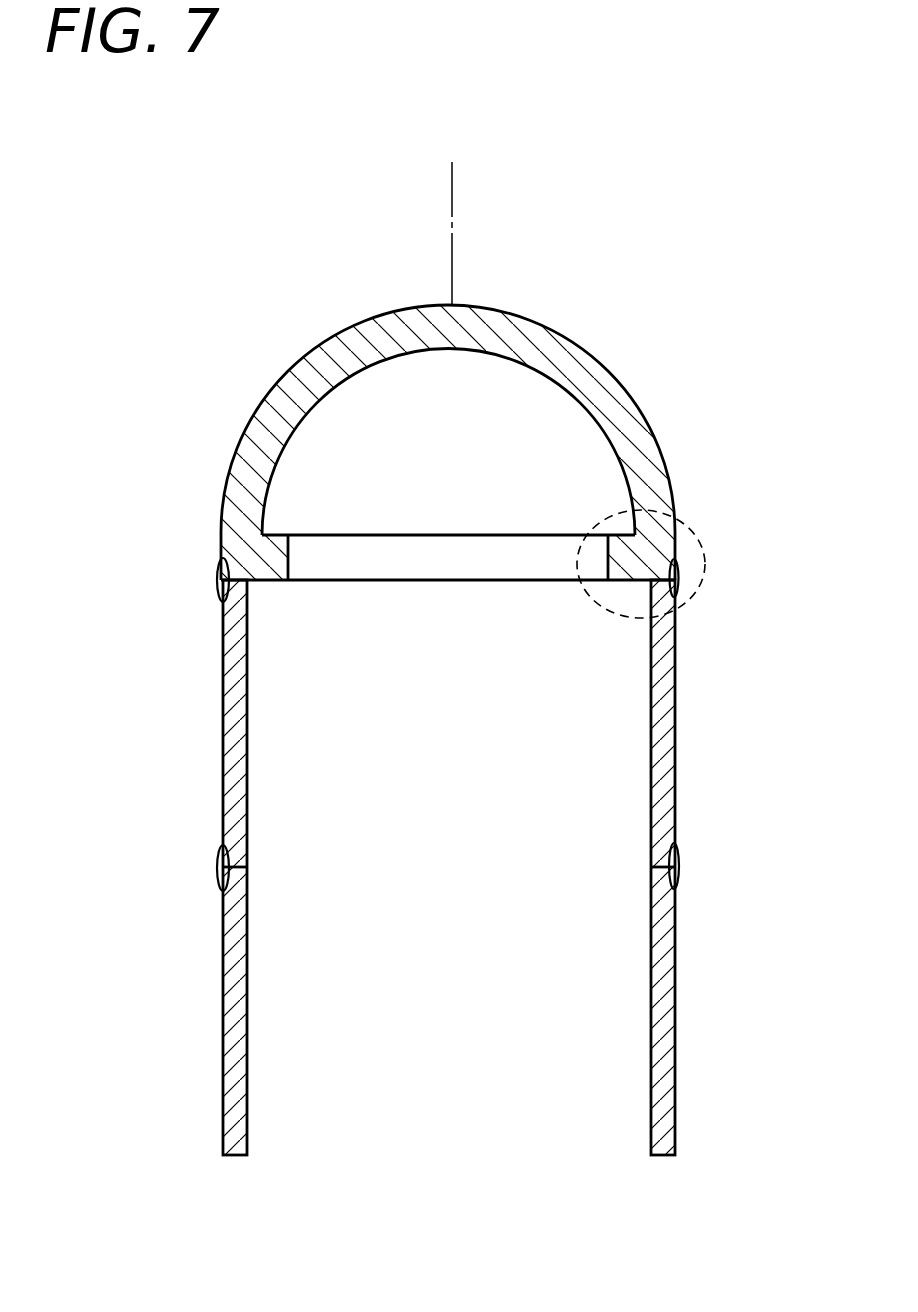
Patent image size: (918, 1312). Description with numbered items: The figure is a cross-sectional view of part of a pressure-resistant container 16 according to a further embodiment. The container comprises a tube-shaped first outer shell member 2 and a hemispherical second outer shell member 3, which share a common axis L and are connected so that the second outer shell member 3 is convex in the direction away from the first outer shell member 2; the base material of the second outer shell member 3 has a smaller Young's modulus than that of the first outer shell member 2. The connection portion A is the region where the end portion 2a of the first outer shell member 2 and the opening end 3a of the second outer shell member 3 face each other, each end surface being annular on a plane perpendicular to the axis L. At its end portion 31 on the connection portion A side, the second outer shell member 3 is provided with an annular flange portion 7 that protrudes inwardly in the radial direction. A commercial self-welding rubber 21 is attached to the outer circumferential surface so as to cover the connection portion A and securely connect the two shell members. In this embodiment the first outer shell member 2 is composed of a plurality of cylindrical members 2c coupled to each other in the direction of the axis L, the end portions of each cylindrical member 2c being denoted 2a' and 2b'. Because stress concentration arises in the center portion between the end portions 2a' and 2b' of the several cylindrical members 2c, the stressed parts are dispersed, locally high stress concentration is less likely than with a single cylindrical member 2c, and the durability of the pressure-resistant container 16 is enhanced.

The pressure-resistant container 16 is at (300, 140).
The axis L is at (452, 193).
The second outer shell member 3 is at (638, 447).
The end portion 31 is at (633, 555).
The opening end 3a is at (230, 562).
The annular flange portion 7 is at (282, 533).
The connection portion A is at (707, 552).
The first outer shell member 2 is at (738, 752).
The end portion 2a is at (298, 614).
The end portion 2a' is at (270, 1011).
The end portion 2b' is at (190, 753).
The cylindrical member 2c is at (663, 767).
The self-welding rubber 21 is at (218, 583).